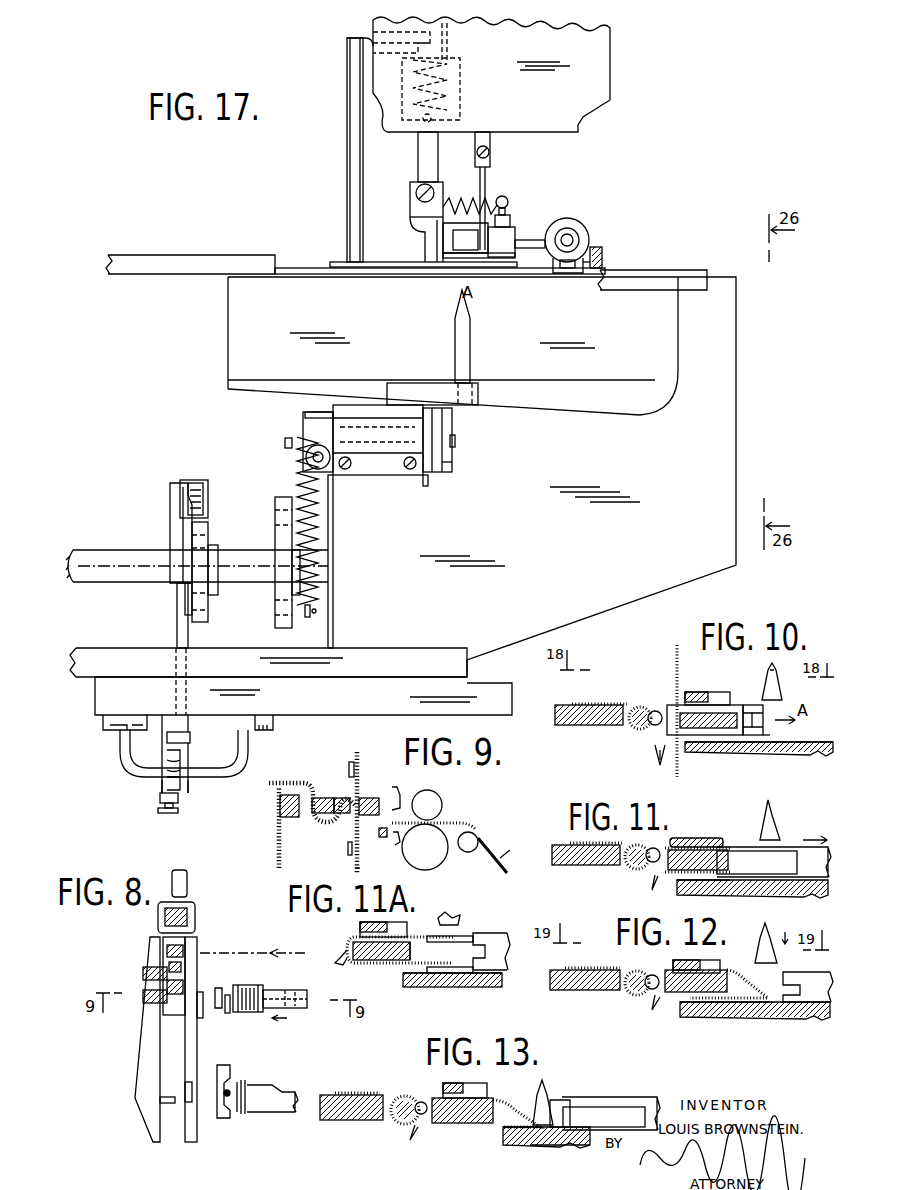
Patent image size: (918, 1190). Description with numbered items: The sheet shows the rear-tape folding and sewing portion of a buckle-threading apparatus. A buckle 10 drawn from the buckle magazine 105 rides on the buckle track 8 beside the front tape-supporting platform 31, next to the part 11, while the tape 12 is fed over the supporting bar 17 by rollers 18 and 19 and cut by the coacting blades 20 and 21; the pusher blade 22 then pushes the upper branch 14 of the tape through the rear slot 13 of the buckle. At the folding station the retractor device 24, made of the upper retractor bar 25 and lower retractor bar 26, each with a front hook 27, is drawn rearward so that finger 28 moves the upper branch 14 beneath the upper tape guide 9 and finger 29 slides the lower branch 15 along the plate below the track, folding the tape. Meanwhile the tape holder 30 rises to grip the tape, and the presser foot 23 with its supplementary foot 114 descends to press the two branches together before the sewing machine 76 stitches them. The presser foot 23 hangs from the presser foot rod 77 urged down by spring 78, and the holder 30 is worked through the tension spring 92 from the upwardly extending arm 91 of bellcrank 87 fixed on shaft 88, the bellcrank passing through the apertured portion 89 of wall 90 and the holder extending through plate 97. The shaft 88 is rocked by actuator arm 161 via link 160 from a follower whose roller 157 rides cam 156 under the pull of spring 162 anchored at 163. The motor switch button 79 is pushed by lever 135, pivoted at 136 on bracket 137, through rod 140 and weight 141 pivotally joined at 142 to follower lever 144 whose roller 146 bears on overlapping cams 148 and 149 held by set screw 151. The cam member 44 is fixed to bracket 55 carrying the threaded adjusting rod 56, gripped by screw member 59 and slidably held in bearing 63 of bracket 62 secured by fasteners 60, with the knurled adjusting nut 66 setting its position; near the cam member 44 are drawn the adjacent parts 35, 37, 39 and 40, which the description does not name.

In FIG. 9, the buckle track 8 is at (369, 797).
In FIG. 8, the buckle track 8 is at (197, 1130).
In FIG. 11A, the buckle track 8 is at (355, 938).
In FIG. 10, the buckle track 8 is at (712, 735).
In FIG. 11, the buckle track 8 is at (728, 860).
In FIG. 12, the buckle track 8 is at (703, 1005).
In FIG. 13, the buckle track 8 is at (470, 1125).
In FIG. 8, the upper tape guide 9 is at (194, 1088).
In FIG. 11A, the upper tape guide 9 is at (392, 926).
In FIG. 10, the upper tape guide 9 is at (695, 692).
In FIG. 11, the upper tape guide 9 is at (690, 836).
In FIG. 12, the upper tape guide 9 is at (688, 960).
In FIG. 13, the upper tape guide 9 is at (450, 1084).
In FIG. 9, the buckle 10 is at (320, 797).
In FIG. 8, the buckle 10 is at (163, 919).
In FIG. 11A, the buckle 10 is at (365, 961).
In FIG. 10, the buckle 10 is at (643, 706).
In FIG. 11, the buckle 10 is at (638, 852).
In FIG. 12, the buckle 10 is at (643, 966).
In FIG. 13, the buckle 10 is at (408, 1093).
In FIG. 9, the strip 11 is at (294, 778).
In FIG. 8, the strip 11 is at (150, 980).
In FIG. 10, the strip 11 is at (599, 698).
In FIG. 11, the strip 11 is at (559, 840).
In FIG. 12, the strip 11 is at (599, 962).
In FIG. 13, the strip 11 is at (354, 1091).
In FIG. 9, the tape 12 is at (471, 825).
In FIG. 8, the tape 12 is at (316, 996).
In FIG. 10, the tape 12 is at (669, 655).
In FIG. 9, the rear slot 13 is at (347, 815).
In FIG. 8, the rear slot 13 is at (195, 917).
In FIG. 12, the rear slot 13 is at (658, 975).
In FIG. 13, the rear slot 13 is at (423, 1101).
In FIG. 9, the upper branch 14 is at (360, 758).
In FIG. 11A, the upper branch 14 is at (445, 942).
In FIG. 10, the upper branch 14 is at (683, 666).
In FIG. 11, the upper branch 14 is at (718, 841).
In FIG. 12, the upper branch 14 is at (745, 989).
In FIG. 13, the upper branch 14 is at (505, 1108).
In FIG. 9, the lower branch 15 is at (355, 868).
In FIG. 11A, the lower branch 15 is at (410, 984).
In FIG. 10, the lower branch 15 is at (679, 775).
In FIG. 11, the lower branch 15 is at (672, 883).
In FIG. 12, the lower branch 15 is at (755, 1010).
In FIG. 13, the lower branch 15 is at (455, 1126).
In FIG. 9, the supporting bar 17 is at (379, 834).
In FIG. 8, the supporting bar 17 is at (204, 1018).
In FIG. 9, the feed roller 18 is at (432, 796).
In FIG. 8, the feed roller 18 is at (252, 988).
In FIG. 9, the feed roller 19 is at (440, 860).
In FIG. 9, the cutting blade 20 is at (404, 784).
In FIG. 8, the cutting blade 20 is at (217, 990).
In FIG. 9, the cutting blade 21 is at (395, 846).
In FIG. 8, the cutting blade 21 is at (228, 994).
In FIG. 9, the pusher blade 22 is at (348, 767).
In FIG. 17, the presser foot 23 is at (425, 238).
In FIG. 8, the presser foot 23 is at (224, 1070).
In FIG. 11A, the presser foot 23 is at (460, 918).
In FIG. 10, the presser foot 23 is at (785, 693).
In FIG. 11, the presser foot 23 is at (772, 811).
In FIG. 12, the presser foot 23 is at (755, 957).
In FIG. 13, the presser foot 23 is at (545, 1080).
In FIG. 8, the retractor device 24 is at (289, 1089).
In FIG. 11A, the retractor device 24 is at (506, 935).
In FIG. 10, the retractor device 24 is at (770, 738).
In FIG. 12, the retractor device 24 is at (810, 988).
In FIG. 10, the upper retractor bar 25 is at (745, 705).
In FIG. 11, the upper retractor bar 25 is at (785, 846).
In FIG. 13, the upper retractor bar 25 is at (620, 1098).
In FIG. 10, the lower retractor bar 26 is at (748, 740).
In FIG. 11, the lower retractor bar 26 is at (752, 878).
In FIG. 13, the lower retractor bar 26 is at (635, 1126).
In FIG. 8, the hook 27 is at (253, 1084).
In FIG. 8, the finger 28 is at (241, 1114).
In FIG. 10, the finger 28 is at (668, 700).
In FIG. 13, the finger 28 is at (565, 1100).
In FIG. 10, the finger 29 is at (653, 746).
In FIG. 13, the finger 29 is at (560, 1148).
In FIG. 17, the tape holder 30 is at (471, 342).
In FIG. 8, the tape holder 30 is at (154, 1103).
In FIG. 11A, the tape holder 30 is at (345, 963).
In FIG. 10, the tape holder 30 is at (659, 768).
In FIG. 11, the tape holder 30 is at (651, 881).
In FIG. 12, the tape holder 30 is at (658, 1012).
In FIG. 13, the tape holder 30 is at (408, 1130).
In FIG. 17, the front tape-supporting platform 31 is at (700, 283).
In FIG. 8, the front tape-supporting platform 31 is at (143, 1130).
In FIG. 10, the front tape-supporting platform 31 is at (575, 725).
In FIG. 11, the front tape-supporting platform 31 is at (578, 866).
In FIG. 12, the front tape-supporting platform 31 is at (585, 992).
In FIG. 13, the front tape-supporting platform 31 is at (345, 1120).
In FIG. 17, the block 35 is at (515, 238).
In FIG. 17, the block 37 is at (511, 220).
In FIG. 17, the spring 39 is at (470, 204).
In FIG. 17, the knob 40 is at (506, 199).
In FIG. 17, the cam member 44 is at (468, 238).
In FIG. 17, the bracket 55 is at (533, 250).
In FIG. 17, the threaded adjusting rod 56 is at (579, 238).
In FIG. 17, the screw member 59 is at (603, 253).
In FIG. 17, the fasteners 60 is at (565, 274).
In FIG. 17, the bracket 62 is at (581, 274).
In FIG. 17, the bearing 63 is at (572, 234).
In FIG. 17, the adjusting nut 66 is at (557, 220).
In FIG. 17, the sewing machine 76 is at (605, 80).
In FIG. 17, the presser foot rod 77 is at (418, 158).
In FIG. 17, the spring 78 is at (447, 75).
In FIG. 17, the motor switch button 79 is at (178, 807).
In FIG. 17, the bellcrank 87 is at (453, 465).
In FIG. 17, the shaft 88 is at (456, 441).
In FIG. 17, the apertured portion 89 is at (427, 478).
In FIG. 17, the wall 90 is at (738, 372).
In FIG. 17, the upwardly extending arm 91 is at (452, 415).
In FIG. 17, the tension spring 92 is at (440, 409).
In FIG. 17, the plate 97 is at (433, 384).
In FIG. 8, the buckle magazine 105 is at (190, 892).
In FIG. 17, the supplementary foot 114 is at (392, 268).
In FIG. 17, the lever 135 is at (180, 758).
In FIG. 17, the pivot 136 is at (182, 782).
In FIG. 17, the bracket 137 is at (160, 792).
In FIG. 17, the rod 140 is at (176, 638).
In FIG. 17, the weight 141 is at (172, 545).
In FIG. 17, the pivotal connection 142 is at (203, 503).
In FIG. 17, the follower lever 144 is at (170, 509).
In FIG. 17, the roller 146 is at (205, 486).
In FIG. 17, the cam 148 is at (185, 606).
In FIG. 17, the cam 149 is at (208, 534).
In FIG. 17, the set screw 151 is at (218, 570).
In FIG. 17, the cam 156 is at (278, 614).
In FIG. 17, the roller 157 is at (277, 511).
In FIG. 17, the link 160 is at (297, 494).
In FIG. 17, the actuator arm 161 is at (306, 414).
In FIG. 17, the spring 162 is at (316, 521).
In FIG. 17, the anchor 163 is at (309, 618).